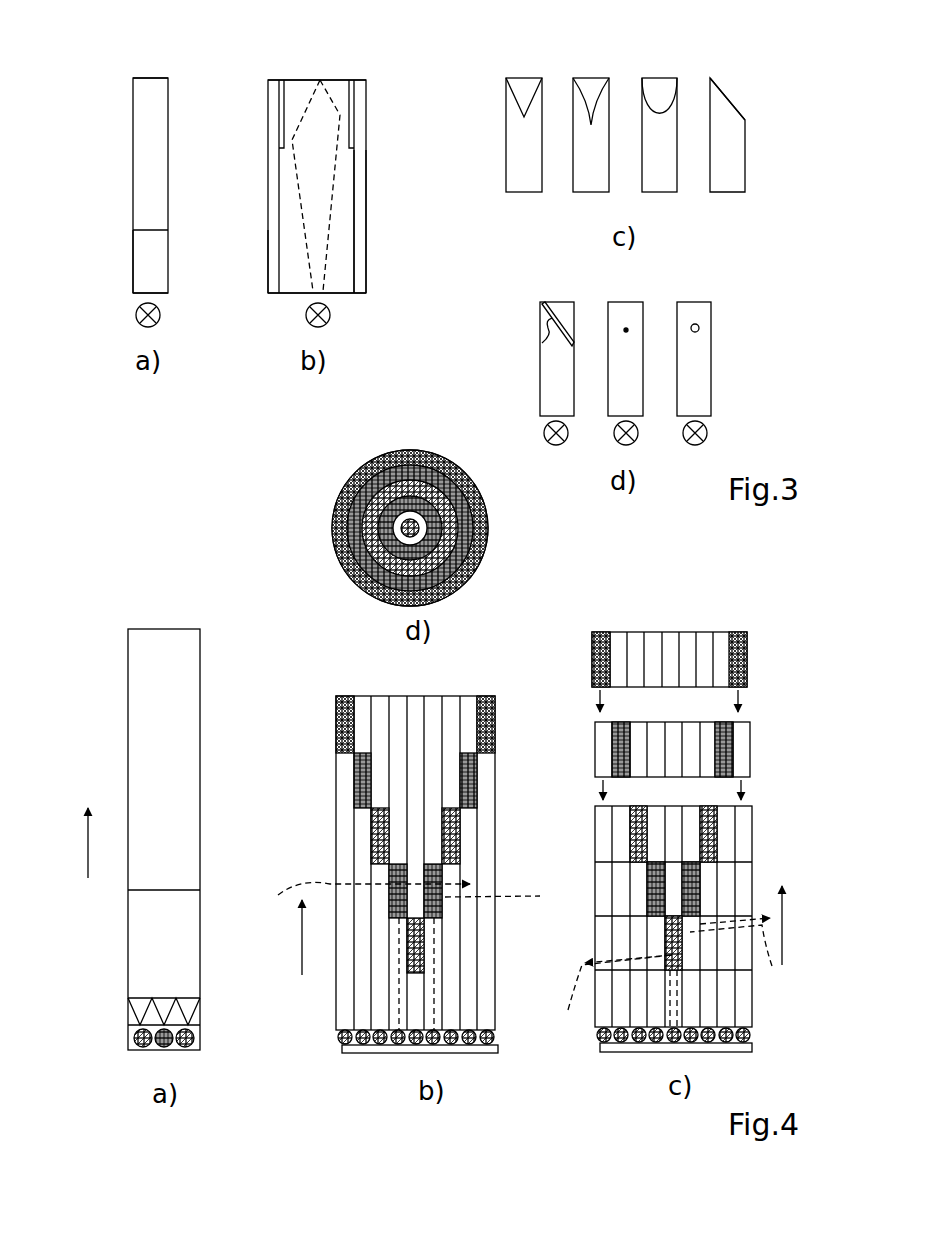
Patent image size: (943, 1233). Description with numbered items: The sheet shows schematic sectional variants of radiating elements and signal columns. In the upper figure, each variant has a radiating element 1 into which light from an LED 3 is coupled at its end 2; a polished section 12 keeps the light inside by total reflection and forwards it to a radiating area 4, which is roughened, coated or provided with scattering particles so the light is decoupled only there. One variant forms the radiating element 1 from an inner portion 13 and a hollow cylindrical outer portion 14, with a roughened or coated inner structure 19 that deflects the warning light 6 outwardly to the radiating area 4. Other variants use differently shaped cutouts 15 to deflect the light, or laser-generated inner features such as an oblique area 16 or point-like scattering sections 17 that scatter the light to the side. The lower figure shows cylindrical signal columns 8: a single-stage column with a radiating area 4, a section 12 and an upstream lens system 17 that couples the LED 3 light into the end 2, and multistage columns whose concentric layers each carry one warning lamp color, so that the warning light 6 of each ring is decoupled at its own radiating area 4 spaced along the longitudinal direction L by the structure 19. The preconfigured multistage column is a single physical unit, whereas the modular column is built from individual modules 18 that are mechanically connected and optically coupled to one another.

In FIG. 3, the radiating element 1 is at (133, 108).
In FIG. 4, the radiating element 1 is at (330, 528).
In FIG. 3, the end 2 is at (166, 297).
In FIG. 4, the end 2 is at (410, 450).
In FIG. 3, the LED 3 is at (136, 315).
In FIG. 4, the LED 3 is at (124, 1036).
In FIG. 3, the radiating area 4 is at (156, 136).
In FIG. 4, the radiating area 4 is at (128, 715).
In FIG. 3, the light 6 is at (318, 80).
In FIG. 4, the light 6 is at (515, 956).
In FIG. 4, the signal column 8 is at (490, 515).
In FIG. 3, the section 12 is at (133, 258).
In FIG. 4, the section 12 is at (352, 470).
In FIG. 3, the portion 13 is at (345, 218).
In FIG. 3, the portion 14 is at (366, 258).
In FIG. 3, the cutout 15 is at (522, 68).
In FIG. 3, the area 16 is at (540, 350).
In FIG. 3, the optical system/lens 17 is at (700, 326).
In FIG. 4, the optical system/lens 17 is at (128, 1010).
In FIG. 4, the module 18 is at (747, 653).
In FIG. 3, the structure 19 is at (278, 76).
In FIG. 4, the structure 19 is at (480, 698).
In FIG. 4, the longitudinal direction L is at (88, 845).